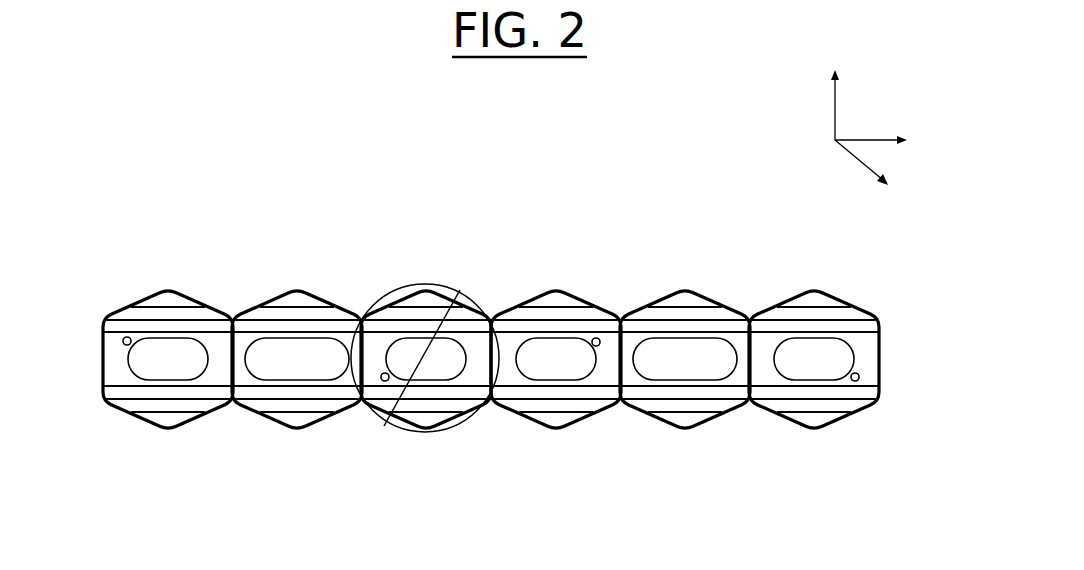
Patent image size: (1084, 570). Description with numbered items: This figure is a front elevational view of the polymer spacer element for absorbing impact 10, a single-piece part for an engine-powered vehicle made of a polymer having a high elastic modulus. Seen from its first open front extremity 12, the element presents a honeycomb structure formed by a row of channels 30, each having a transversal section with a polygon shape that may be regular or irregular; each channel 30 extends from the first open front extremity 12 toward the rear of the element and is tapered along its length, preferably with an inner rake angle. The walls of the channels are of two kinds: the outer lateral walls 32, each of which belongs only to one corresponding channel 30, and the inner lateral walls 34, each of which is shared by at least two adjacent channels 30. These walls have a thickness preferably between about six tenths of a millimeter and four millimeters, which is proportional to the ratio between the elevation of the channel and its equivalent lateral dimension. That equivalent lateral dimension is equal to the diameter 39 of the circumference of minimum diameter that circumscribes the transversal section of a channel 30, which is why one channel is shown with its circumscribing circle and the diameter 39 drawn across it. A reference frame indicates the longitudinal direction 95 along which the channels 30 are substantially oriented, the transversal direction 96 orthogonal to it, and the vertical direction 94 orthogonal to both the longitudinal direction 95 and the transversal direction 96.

The polymer spacer element for absorbing impact 10 is at (190, 148).
The first open front extremity 12 is at (103, 392).
The channel 30 is at (150, 322).
The outer lateral wall 32 is at (123, 308).
The inner lateral wall 34 is at (452, 302).
The diameter 39 is at (387, 420).
The vertical direction 94 is at (854, 95).
The longitudinal direction 95 is at (879, 178).
The transversal direction 96 is at (891, 141).